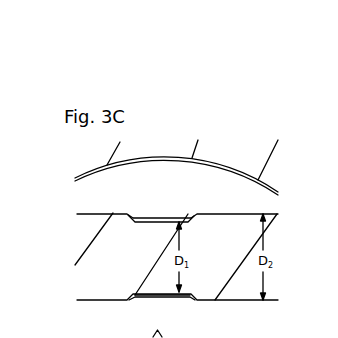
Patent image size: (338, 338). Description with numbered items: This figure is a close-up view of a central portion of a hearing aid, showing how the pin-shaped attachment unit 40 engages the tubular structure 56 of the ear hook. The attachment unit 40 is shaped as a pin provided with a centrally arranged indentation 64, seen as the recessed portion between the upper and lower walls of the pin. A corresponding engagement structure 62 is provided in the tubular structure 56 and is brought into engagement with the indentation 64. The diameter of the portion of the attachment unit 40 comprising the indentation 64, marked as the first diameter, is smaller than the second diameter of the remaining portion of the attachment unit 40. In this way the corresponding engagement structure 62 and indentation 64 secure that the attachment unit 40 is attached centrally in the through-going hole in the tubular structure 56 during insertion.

The engagement structure 62 is at (143, 213).
The tubular structure 56 is at (82, 190).
The indentation 64 is at (160, 293).
The attachment unit 40 is at (83, 300).